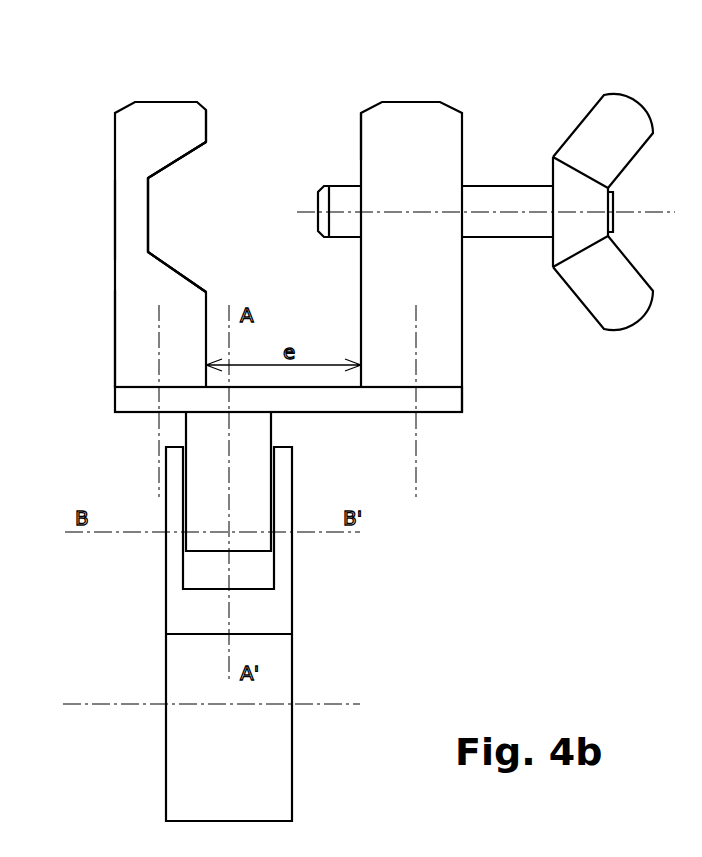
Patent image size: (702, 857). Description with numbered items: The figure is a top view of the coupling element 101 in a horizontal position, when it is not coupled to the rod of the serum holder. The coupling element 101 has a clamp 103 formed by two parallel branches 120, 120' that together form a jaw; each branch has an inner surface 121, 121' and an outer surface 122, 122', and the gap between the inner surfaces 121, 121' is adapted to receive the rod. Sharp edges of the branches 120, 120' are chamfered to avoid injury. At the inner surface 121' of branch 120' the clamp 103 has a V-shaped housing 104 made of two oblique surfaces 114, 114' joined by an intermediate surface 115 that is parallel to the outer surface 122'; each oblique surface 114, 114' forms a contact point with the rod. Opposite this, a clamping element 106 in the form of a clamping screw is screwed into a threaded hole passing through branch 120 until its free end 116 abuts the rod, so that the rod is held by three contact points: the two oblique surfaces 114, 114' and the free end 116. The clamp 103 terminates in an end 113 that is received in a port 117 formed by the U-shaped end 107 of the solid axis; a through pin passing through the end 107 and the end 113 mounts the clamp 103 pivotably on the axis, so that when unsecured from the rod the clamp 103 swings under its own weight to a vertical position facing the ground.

The coupling element 101 is at (470, 426).
The clamp 103 is at (115, 218).
The housing 104 is at (148, 194).
The clamping element 106 is at (516, 178).
The U-shaped end 107 is at (273, 575).
The end of clamp 113 is at (210, 499).
The oblique surface 114 is at (219, 272).
The oblique surface 114' is at (218, 160).
The intermediate surface 115 is at (150, 213).
The free end 116 is at (325, 188).
The port 117 is at (200, 589).
The branch 120 is at (411, 209).
The branch 120' is at (160, 197).
The inner surface 121 is at (356, 95).
The inner surface 121' is at (225, 88).
The outer surface 122 is at (511, 426).
The outer surface 122' is at (74, 338).